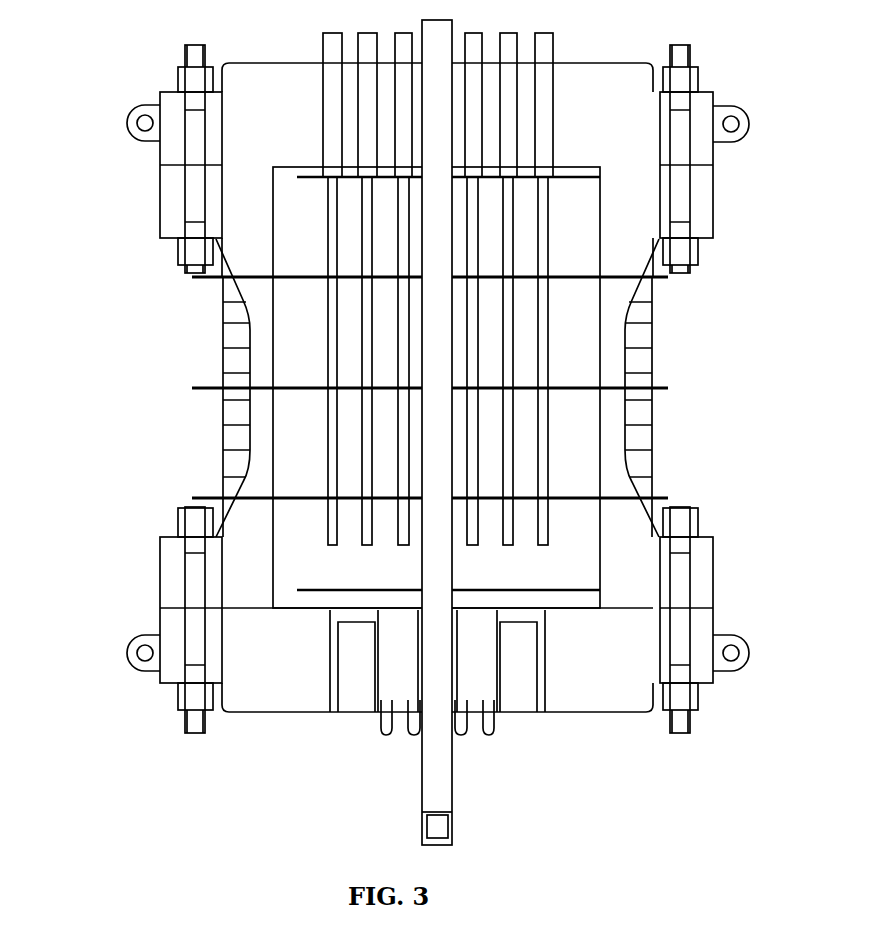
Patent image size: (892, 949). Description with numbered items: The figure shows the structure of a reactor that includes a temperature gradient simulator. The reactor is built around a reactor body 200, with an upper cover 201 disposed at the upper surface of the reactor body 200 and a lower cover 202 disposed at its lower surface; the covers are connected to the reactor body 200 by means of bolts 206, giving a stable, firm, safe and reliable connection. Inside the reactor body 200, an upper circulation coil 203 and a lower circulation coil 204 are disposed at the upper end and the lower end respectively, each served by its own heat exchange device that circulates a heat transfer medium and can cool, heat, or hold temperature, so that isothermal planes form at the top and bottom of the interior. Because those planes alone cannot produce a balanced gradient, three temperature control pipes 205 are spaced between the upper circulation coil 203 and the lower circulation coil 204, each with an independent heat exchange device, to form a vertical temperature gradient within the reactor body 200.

The reactor body 200 is at (253, 243).
The upper cover 201 is at (172, 138).
The lower cover 202 is at (177, 647).
The upper circulation coil 203 is at (583, 182).
The lower circulation coil 204 is at (578, 591).
The temperature control pipe 205 is at (203, 279).
The bolt 206 is at (675, 127).